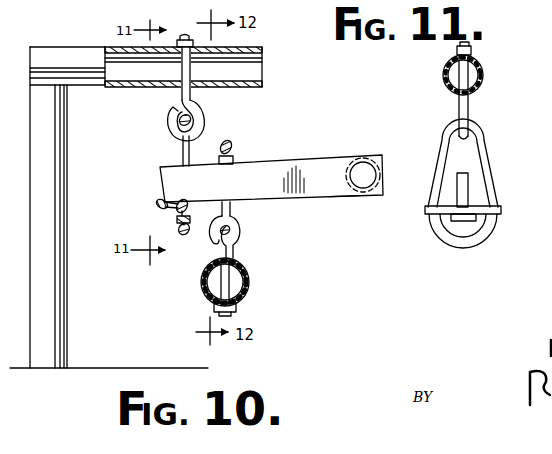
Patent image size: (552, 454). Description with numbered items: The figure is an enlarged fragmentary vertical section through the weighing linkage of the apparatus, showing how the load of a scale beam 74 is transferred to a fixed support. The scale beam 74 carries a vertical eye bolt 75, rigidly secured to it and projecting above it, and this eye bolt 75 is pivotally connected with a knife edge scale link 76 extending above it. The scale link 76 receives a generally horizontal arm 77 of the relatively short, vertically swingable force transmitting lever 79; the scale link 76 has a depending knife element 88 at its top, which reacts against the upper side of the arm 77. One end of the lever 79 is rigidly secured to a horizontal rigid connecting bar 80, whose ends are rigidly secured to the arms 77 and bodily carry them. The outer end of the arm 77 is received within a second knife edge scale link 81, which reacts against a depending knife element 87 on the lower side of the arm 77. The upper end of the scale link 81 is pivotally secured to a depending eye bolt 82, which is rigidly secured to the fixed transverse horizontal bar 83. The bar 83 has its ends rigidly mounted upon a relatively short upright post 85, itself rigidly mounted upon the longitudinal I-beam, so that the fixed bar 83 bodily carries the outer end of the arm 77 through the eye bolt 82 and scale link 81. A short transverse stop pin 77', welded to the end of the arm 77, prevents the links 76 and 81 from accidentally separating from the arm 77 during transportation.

In FIG. 10, the scale beam 74 is at (250, 287).
In FIG. 10, the eye bolt 75 is at (232, 247).
In FIG. 10, the knife edge scale link 76 is at (232, 133).
In FIG. 10, the arm 77 is at (271, 161).
In FIG. 11, the arm 77 is at (493, 184).
In FIG. 10, the stop pin 77' is at (146, 213).
In FIG. 11, the stop pin 77' is at (483, 206).
In FIG. 10, the force transmitting lever 79 is at (359, 154).
In FIG. 10, the connecting bar 80 is at (346, 198).
In FIG. 10, the knife edge scale link 81 is at (182, 145).
In FIG. 11, the knife edge scale link 81 is at (442, 155).
In FIG. 10, the eye bolt 82 is at (178, 70).
In FIG. 11, the eye bolt 82 is at (472, 103).
In FIG. 11, the horizontal bar 83 is at (482, 70).
In FIG. 10, the upright post 85 is at (58, 200).
In FIG. 10, the knife element 87 is at (173, 203).
In FIG. 11, the knife element 87 is at (472, 220).
In FIG. 10, the knife element 88 is at (233, 147).